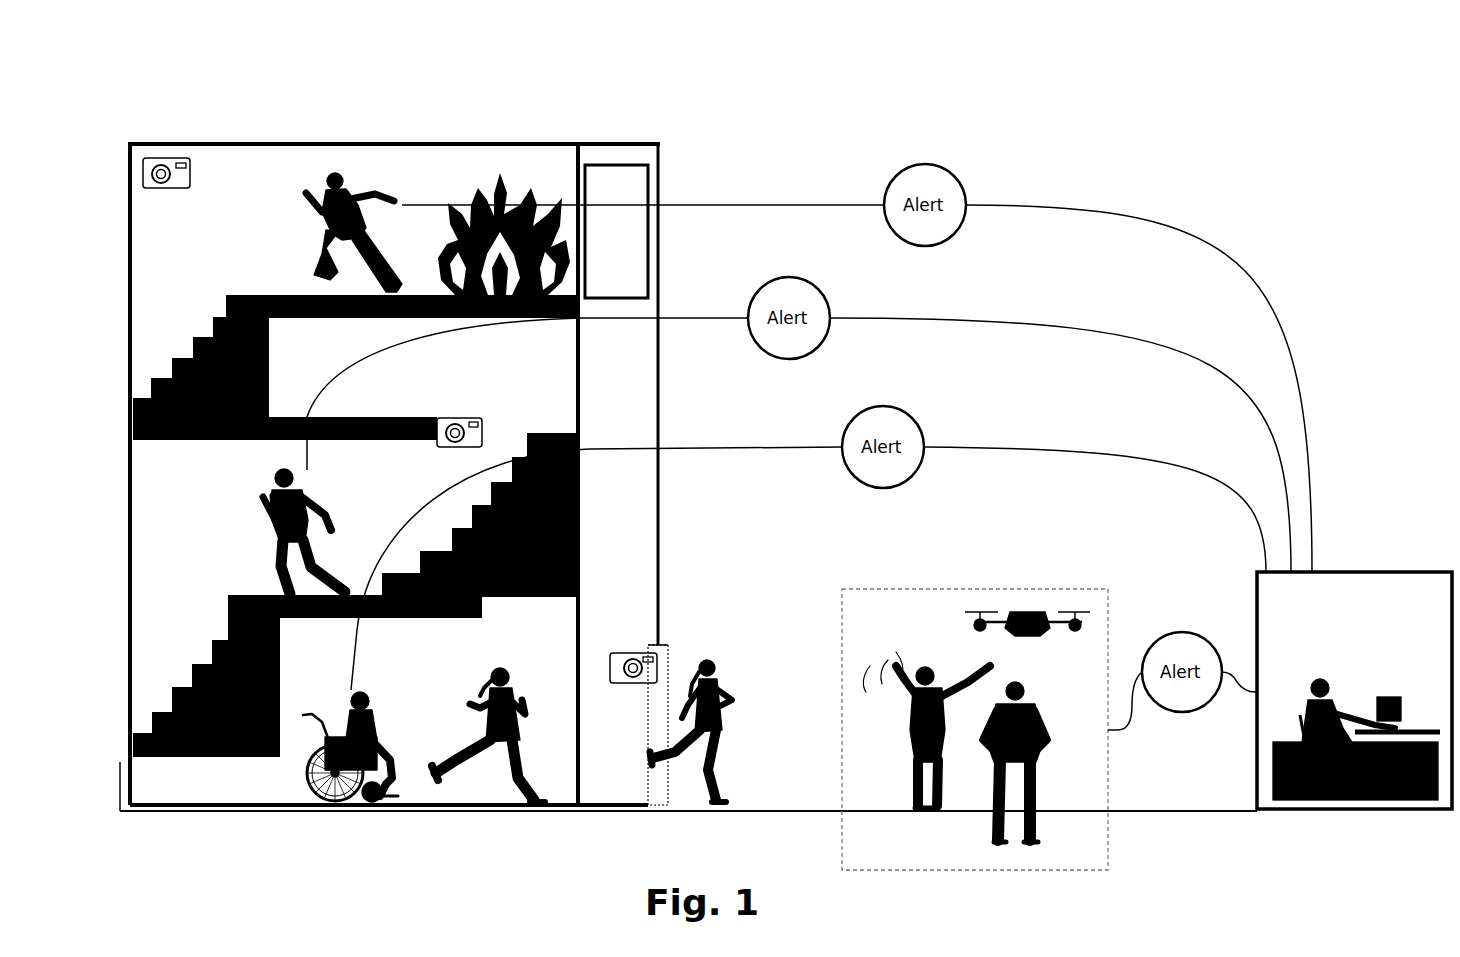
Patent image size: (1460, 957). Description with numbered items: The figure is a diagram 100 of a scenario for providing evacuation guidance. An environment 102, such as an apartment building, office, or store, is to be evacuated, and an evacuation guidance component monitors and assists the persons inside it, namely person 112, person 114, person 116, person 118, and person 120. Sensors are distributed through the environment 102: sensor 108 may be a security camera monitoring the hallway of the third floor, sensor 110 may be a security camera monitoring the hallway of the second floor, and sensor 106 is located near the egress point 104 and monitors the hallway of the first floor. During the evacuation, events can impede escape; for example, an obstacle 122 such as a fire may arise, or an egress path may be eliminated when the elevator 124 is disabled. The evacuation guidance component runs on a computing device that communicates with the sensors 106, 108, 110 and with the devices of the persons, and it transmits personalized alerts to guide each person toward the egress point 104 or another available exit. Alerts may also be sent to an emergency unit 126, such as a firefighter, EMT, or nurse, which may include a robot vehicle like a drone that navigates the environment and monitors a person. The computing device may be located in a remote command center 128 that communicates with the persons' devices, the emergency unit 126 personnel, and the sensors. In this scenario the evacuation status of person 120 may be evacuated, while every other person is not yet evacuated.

The diagram 100 is at (806, 23).
The environment 102 is at (230, 141).
The egress point 104 is at (668, 650).
The sensor 106 is at (640, 655).
The sensor 108 is at (172, 170).
The sensor 110 is at (458, 418).
The person 112 is at (262, 493).
The person 114 is at (332, 178).
The person 116 is at (355, 692).
The person 118 is at (492, 677).
The person 120 is at (720, 672).
The obstacle 122 is at (498, 182).
The elevator 124 is at (615, 170).
The emergency unit 126 is at (1040, 592).
The command center 128 is at (1338, 597).